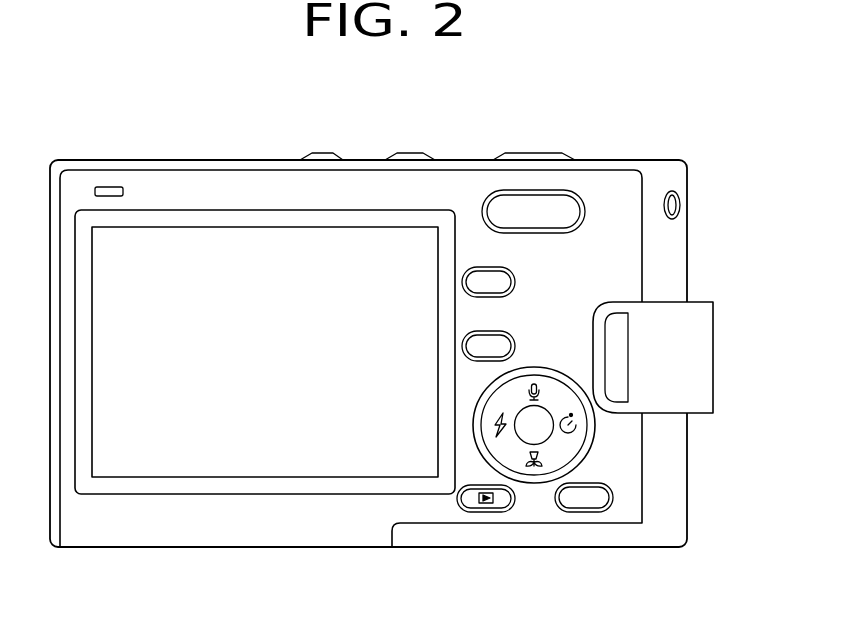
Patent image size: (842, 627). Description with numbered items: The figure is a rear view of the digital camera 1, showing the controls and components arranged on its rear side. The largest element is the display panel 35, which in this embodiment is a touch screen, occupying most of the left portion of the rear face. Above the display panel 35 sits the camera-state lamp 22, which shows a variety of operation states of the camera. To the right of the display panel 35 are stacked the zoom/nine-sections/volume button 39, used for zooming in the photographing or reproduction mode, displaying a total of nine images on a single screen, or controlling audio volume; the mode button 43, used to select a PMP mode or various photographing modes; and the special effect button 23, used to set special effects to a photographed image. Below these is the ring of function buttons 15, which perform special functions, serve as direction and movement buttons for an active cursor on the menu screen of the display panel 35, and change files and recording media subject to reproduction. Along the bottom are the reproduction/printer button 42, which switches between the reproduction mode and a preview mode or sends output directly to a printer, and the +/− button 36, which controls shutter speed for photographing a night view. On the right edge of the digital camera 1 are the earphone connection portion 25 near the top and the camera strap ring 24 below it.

The digital camera 1 is at (672, 131).
The function buttons 15 is at (592, 442).
The camera-state lamp 22 is at (109, 187).
The special effect button 23 is at (505, 347).
The camera strap ring 24 is at (705, 355).
The earphone connection portion 25 is at (680, 205).
The display panel 35 is at (225, 248).
The +/− button 36 is at (580, 512).
The zoom/9 sections/volume button 39 is at (523, 210).
The reproduction/printer button 42 is at (483, 512).
The mode button 43 is at (478, 268).